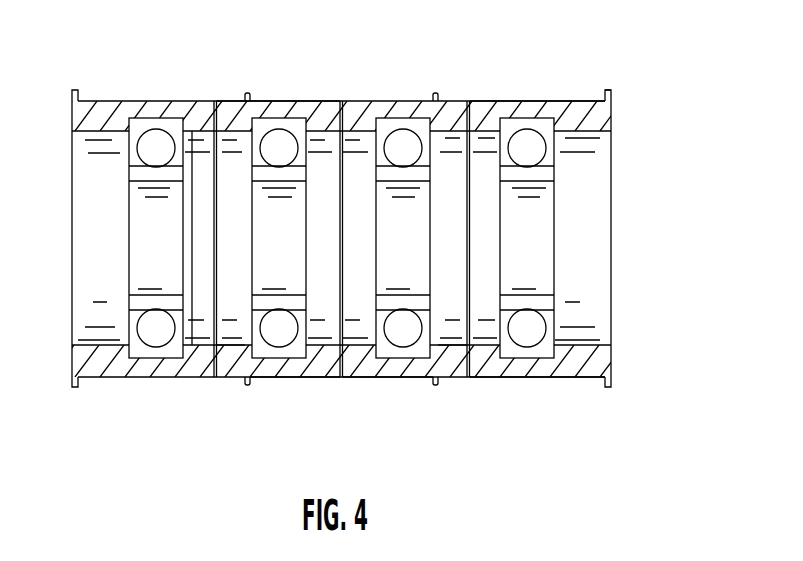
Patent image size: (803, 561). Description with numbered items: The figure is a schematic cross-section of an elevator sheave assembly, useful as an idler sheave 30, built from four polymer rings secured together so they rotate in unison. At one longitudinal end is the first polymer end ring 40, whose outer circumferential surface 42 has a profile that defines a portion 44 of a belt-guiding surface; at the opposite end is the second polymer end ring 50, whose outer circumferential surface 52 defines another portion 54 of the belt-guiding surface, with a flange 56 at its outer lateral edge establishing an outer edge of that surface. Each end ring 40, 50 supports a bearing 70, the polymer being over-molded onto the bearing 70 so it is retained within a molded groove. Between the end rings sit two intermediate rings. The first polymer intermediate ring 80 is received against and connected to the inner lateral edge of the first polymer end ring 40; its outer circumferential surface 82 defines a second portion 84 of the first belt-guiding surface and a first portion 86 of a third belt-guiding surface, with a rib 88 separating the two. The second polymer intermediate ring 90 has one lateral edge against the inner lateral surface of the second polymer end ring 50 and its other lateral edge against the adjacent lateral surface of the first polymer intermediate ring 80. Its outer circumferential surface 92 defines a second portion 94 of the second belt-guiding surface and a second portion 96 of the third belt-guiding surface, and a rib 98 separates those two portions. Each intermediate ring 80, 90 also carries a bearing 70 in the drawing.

The idler sheave 30 is at (67, 28).
The first polymer end ring 40 is at (69, 300).
The outer circumferential surface 42 is at (110, 379).
The portion of belt-guiding surface 44 is at (130, 100).
The second polymer end ring 50 is at (614, 360).
The outer circumferential surface 52 is at (556, 379).
The portion of belt-guiding surface 54 is at (546, 100).
The flange 56 is at (610, 91).
The bearing 70 is at (137, 176).
The first polymer intermediate ring 80 is at (240, 346).
The outer circumferential surface 82 is at (293, 379).
The second portion of first belt-guiding surface 84 is at (228, 100).
The first portion of third belt-guiding surface 86 is at (306, 100).
The rib 88 is at (251, 96).
The second polymer intermediate ring 90 is at (442, 348).
The outer circumferential surface 92 is at (393, 379).
The second portion of second belt-guiding surface 94 is at (453, 100).
The second portion of third belt-guiding surface 96 is at (368, 100).
The rib 98 is at (438, 94).